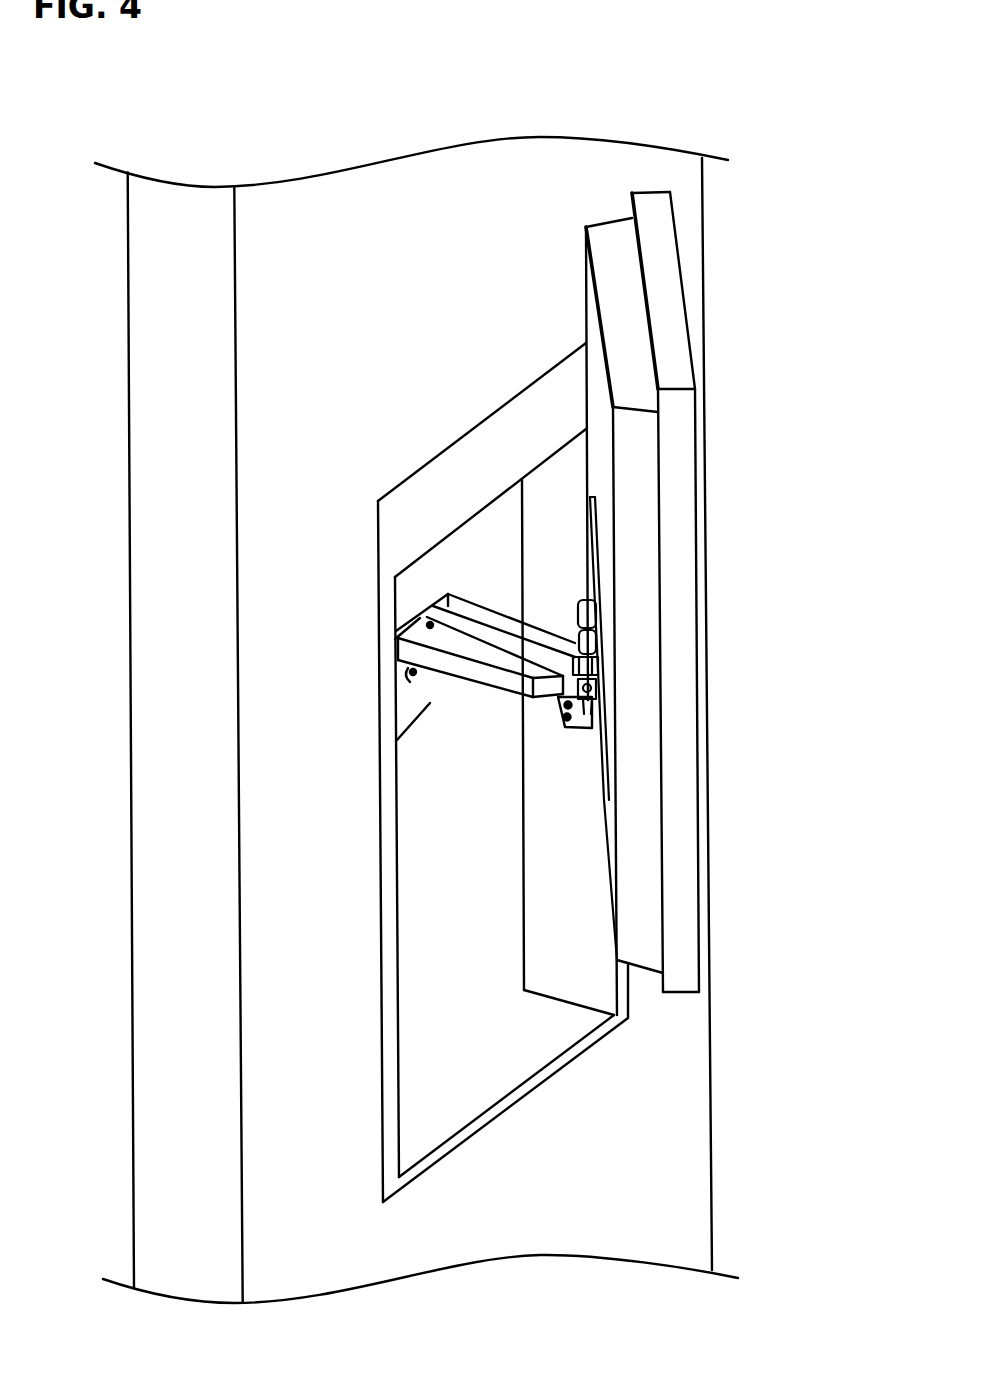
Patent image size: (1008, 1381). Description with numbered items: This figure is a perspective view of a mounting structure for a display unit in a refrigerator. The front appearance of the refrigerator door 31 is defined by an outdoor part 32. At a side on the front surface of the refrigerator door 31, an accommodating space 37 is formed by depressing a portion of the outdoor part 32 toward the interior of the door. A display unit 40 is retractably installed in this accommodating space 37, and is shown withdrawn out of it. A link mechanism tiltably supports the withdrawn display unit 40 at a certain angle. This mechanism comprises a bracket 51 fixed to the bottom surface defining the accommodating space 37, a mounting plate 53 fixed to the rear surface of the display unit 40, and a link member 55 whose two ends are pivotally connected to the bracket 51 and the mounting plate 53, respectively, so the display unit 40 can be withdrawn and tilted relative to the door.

The refrigerator door 31 is at (756, 1187).
The outdoor part 32 is at (477, 1232).
The accommodating space 37 is at (483, 870).
The display unit 40 is at (705, 465).
The bracket 51 is at (425, 712).
The mounting plate 53 is at (598, 677).
The link member 55 is at (612, 799).